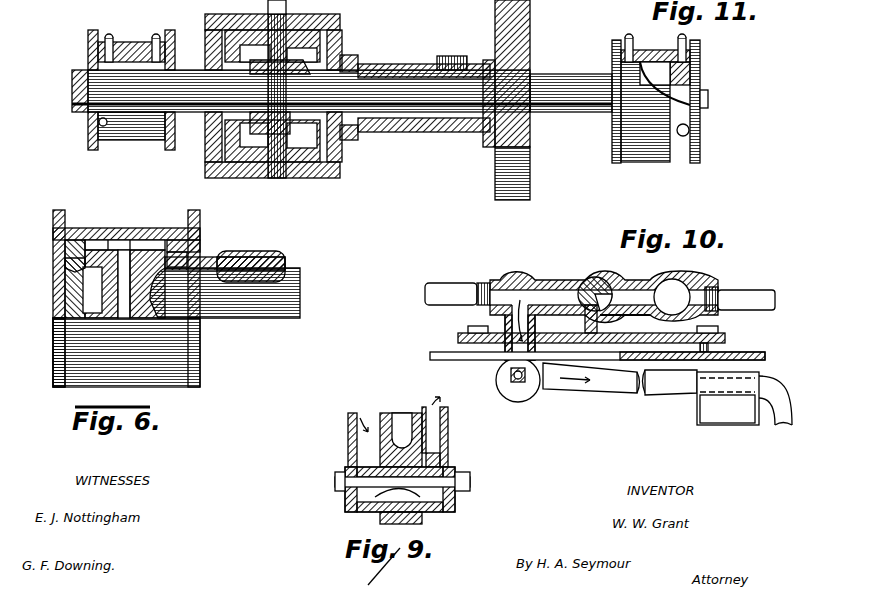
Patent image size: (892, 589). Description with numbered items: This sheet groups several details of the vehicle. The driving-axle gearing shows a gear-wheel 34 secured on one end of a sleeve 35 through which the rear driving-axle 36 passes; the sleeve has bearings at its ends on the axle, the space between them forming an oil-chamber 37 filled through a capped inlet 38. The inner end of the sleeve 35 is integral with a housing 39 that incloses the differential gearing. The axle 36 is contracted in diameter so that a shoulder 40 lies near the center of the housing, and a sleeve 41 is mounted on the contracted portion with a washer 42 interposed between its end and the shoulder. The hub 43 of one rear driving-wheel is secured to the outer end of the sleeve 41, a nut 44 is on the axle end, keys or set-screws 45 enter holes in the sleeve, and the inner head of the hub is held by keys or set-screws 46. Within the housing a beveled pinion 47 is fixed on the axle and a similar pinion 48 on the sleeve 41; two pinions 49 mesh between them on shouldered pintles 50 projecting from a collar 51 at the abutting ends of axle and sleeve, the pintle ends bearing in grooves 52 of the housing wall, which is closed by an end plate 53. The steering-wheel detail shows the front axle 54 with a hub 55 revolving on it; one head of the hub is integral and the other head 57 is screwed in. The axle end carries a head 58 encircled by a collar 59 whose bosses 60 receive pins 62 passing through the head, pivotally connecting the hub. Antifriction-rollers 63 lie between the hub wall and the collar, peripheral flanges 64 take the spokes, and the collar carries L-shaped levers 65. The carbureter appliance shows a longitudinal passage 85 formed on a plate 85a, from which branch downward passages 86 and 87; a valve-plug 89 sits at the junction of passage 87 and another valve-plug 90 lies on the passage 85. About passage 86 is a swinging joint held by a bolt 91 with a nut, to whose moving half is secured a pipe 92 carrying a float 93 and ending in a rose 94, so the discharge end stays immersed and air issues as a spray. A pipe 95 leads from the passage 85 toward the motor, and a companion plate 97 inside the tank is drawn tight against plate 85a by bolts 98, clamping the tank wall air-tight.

In FIG. 11, the gear-wheel 34 is at (530, 180).
In FIG. 11, the sleeve 35 is at (450, 132).
In FIG. 11, the rear driving-axle 36 is at (572, 112).
In FIG. 11, the oil-chamber 37 is at (423, 118).
In FIG. 11, the capped inlet 38 is at (440, 82).
In FIG. 11, the housing 39 is at (340, 40).
In FIG. 11, the shoulder 40 is at (345, 145).
In FIG. 11, the sleeve 41 is at (190, 112).
In FIG. 11, the washer 42 is at (267, 127).
In FIG. 11, the hub 43 is at (125, 140).
In FIG. 11, the nut 44 is at (88, 112).
In FIG. 11, the keys or set-screws 45 is at (109, 36).
In FIG. 11, the keys or set-screws 46 is at (156, 36).
In FIG. 11, the beveled pinion 47 is at (342, 48).
In FIG. 11, the pinion 48 is at (240, 52).
In FIG. 11, the pinions 49 is at (290, 170).
In FIG. 11, the shouldered pintles 50 is at (280, 14).
In FIG. 11, the collar 51 is at (343, 170).
In FIG. 11, the grooves 52 is at (245, 20).
In FIG. 11, the end plate 53 is at (205, 158).
In FIG. 6, the front axle 54 is at (270, 318).
In FIG. 6, the hubs 55 is at (160, 360).
In FIG. 6, the head 57 is at (190, 250).
In FIG. 6, the heads 58 is at (80, 283).
In FIG. 6, the collar 59 is at (98, 248).
In FIG. 6, the bosses 60 is at (78, 263).
In FIG. 6, the pins 62 is at (55, 335).
In FIG. 6, the antifriction-rollers 63 is at (90, 240).
In FIG. 6, the peripheral flanges 64 is at (55, 226).
In FIG. 6, the L-shaped levers 65 is at (286, 266).
In FIG. 10, the longitudinal passage 85 is at (530, 290).
In FIG. 10, the plate 85a is at (645, 316).
In FIG. 10, the passage 86 is at (505, 319).
In FIG. 9, the passage 86 is at (357, 437).
In FIG. 10, the passage 87 is at (596, 318).
In FIG. 10, the valve-plug 89 is at (596, 277).
In FIG. 10, the valve-plug 90 is at (680, 281).
In FIG. 9, the bolt 91 is at (455, 467).
In FIG. 10, the pipe 92 is at (608, 386).
In FIG. 10, the float 93 is at (727, 415).
In FIG. 10, the rose 94 is at (779, 420).
In FIG. 10, the pipe 95 is at (750, 292).
In FIG. 10, the companion plate 97 is at (762, 349).
In FIG. 10, the bolts 98 is at (712, 333).